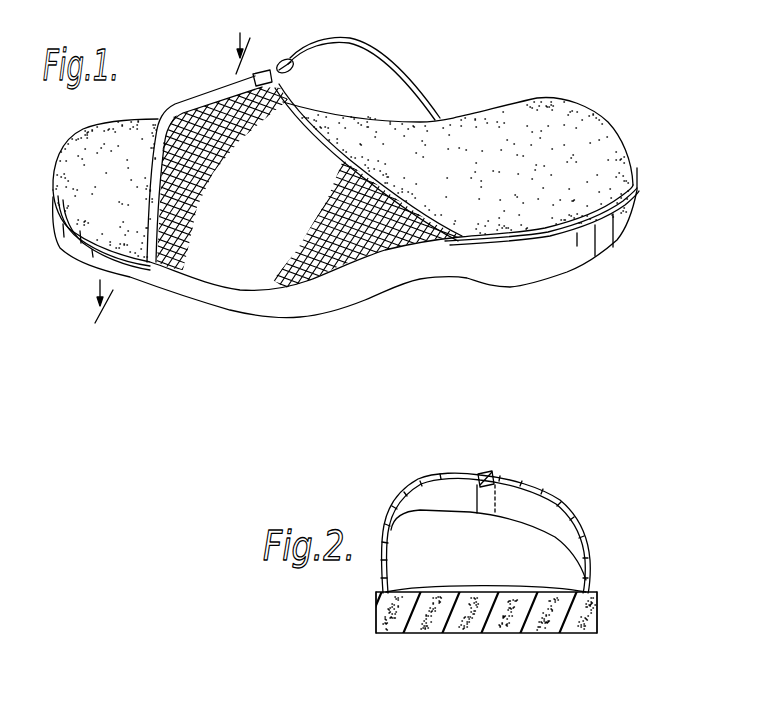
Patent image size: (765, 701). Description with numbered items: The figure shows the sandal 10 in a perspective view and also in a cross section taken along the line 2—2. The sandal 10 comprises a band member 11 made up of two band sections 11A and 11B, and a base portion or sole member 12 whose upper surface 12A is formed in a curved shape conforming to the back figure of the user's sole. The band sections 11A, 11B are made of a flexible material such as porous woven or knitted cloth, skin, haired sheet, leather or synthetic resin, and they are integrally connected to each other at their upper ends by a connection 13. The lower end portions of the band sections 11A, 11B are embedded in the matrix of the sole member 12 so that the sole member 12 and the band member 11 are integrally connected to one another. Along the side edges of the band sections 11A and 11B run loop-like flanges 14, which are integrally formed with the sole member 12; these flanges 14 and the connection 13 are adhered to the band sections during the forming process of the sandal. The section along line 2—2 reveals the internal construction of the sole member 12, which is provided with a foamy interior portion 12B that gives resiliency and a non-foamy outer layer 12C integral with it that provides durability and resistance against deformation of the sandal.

In FIG. 1, the sandal 10 is at (553, 93).
In FIG. 1, the band member 11 is at (428, 100).
In FIG. 2, the band member 11 is at (590, 528).
In FIG. 1, the band section 11A is at (403, 108).
In FIG. 2, the band section 11A is at (543, 480).
In FIG. 1, the band section 11B is at (250, 277).
In FIG. 2, the band section 11B is at (393, 502).
In FIG. 1, the sole member 12 is at (531, 267).
In FIG. 2, the sole member 12 is at (598, 609).
In FIG. 1, the upper surface 12A is at (579, 141).
In FIG. 2, the foamy interior portion 12B is at (400, 606).
In FIG. 2, the non-foamy outer layer 12C is at (550, 625).
In FIG. 1, the connection 13 is at (193, 102).
In FIG. 2, the connection 13 is at (493, 473).
In FIG. 1, the loop-like flanges 14 is at (163, 266).
In FIG. 1, the section line 2 is at (240, 50).